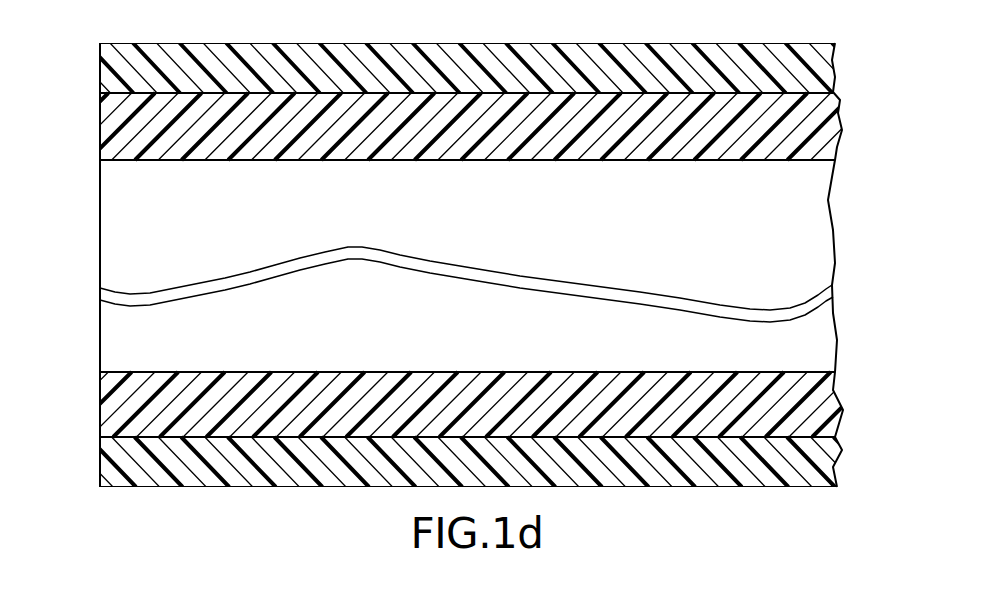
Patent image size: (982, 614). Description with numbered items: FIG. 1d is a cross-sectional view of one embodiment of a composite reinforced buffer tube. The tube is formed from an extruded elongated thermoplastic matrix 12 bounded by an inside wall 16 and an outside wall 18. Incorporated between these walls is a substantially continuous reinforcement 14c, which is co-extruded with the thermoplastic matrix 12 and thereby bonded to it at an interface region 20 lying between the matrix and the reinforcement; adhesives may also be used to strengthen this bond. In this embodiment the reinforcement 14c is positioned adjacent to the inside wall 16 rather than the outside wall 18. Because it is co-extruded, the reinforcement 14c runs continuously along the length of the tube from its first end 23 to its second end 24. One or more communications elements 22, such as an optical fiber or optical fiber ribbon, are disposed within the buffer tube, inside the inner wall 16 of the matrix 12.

The thermoplastic matrix 12 is at (463, 243).
The reinforcement 14c is at (385, 153).
The inside wall 16 is at (438, 160).
The outside wall 18 is at (537, 42).
The interface region 20 is at (713, 94).
The communications element 22 is at (540, 283).
The first end 23 is at (99, 131).
The second end 24 is at (846, 118).